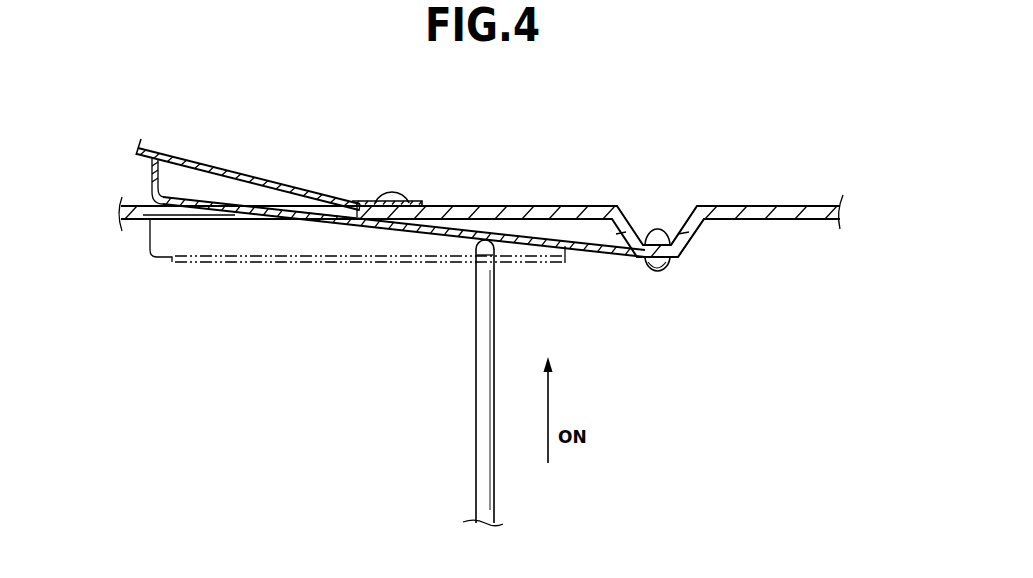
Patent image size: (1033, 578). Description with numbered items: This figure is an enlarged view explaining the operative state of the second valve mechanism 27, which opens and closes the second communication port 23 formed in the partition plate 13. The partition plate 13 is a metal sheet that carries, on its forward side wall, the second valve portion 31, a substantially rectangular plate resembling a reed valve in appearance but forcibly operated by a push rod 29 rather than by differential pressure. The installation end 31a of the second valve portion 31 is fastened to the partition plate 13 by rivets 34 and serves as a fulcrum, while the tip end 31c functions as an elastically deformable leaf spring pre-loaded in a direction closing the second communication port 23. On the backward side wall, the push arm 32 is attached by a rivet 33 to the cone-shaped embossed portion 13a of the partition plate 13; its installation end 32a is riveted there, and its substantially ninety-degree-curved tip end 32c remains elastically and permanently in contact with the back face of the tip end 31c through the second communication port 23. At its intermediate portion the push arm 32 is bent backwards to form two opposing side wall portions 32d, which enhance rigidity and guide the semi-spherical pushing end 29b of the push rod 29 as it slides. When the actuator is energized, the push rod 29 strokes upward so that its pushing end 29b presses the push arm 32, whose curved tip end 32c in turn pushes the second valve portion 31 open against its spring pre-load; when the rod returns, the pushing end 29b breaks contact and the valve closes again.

The partition plate 13 is at (553, 206).
The embossed portion 13a is at (689, 238).
The second communication port 23 is at (200, 214).
The second valve mechanism 27 is at (144, 118).
The push rod 29 is at (483, 493).
The semi-spherical pushing end 29b is at (472, 251).
The second valve portion 31 is at (279, 184).
The installation end 31a is at (422, 203).
The tip end 31c is at (140, 152).
The push arm 32 is at (581, 254).
The installation end 32a is at (639, 258).
The curved tip end 32c is at (150, 184).
The side wall portions 32d is at (342, 223).
The rivet 33 is at (670, 268).
The rivets 34 is at (393, 192).